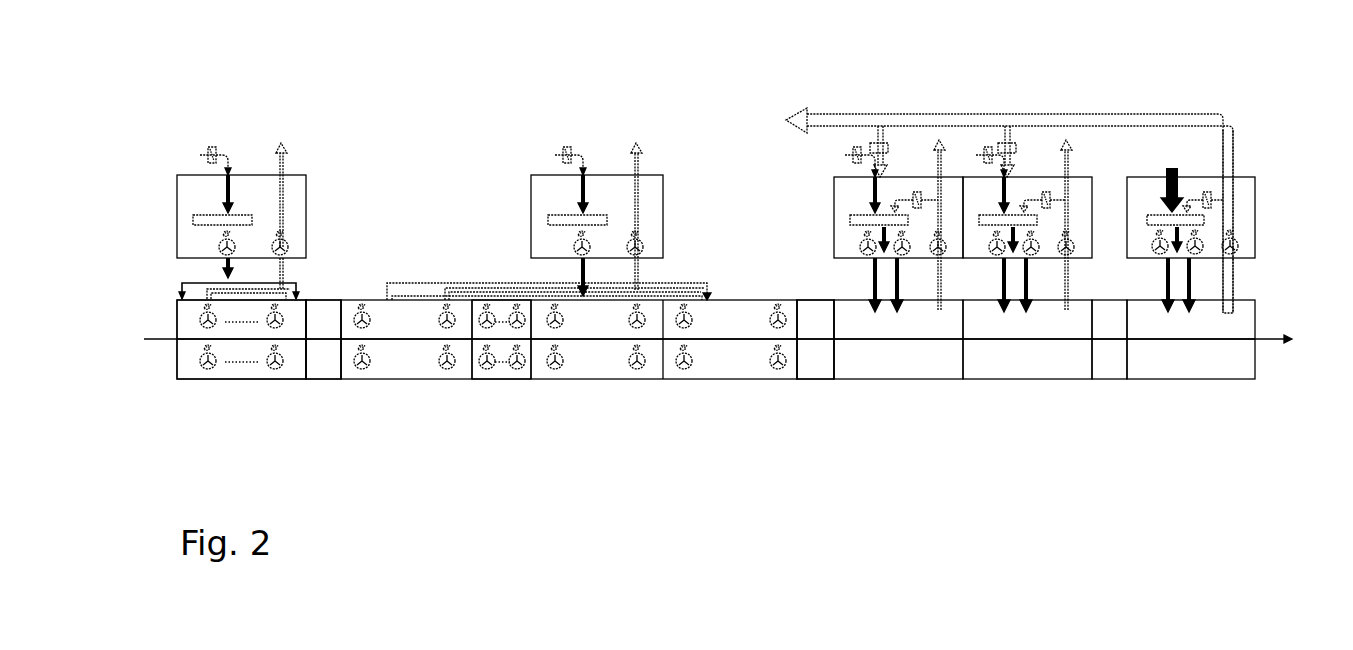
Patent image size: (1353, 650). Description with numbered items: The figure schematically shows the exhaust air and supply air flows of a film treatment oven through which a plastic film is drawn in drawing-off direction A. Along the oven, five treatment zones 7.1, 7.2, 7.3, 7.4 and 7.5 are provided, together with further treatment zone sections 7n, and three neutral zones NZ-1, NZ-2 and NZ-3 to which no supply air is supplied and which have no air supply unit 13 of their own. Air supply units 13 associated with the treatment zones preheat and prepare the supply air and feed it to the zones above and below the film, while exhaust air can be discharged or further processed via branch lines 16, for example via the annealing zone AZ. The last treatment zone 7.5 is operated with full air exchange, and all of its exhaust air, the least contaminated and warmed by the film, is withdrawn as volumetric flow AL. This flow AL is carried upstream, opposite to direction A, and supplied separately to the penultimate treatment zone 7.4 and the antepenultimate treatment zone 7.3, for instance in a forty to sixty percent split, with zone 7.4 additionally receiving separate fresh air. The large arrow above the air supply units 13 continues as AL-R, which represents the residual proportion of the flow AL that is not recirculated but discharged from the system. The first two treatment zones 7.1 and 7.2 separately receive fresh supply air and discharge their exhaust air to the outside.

The air supply unit 13 is at (293, 198).
The branch lines 16 is at (477, 290).
The first treatment zone 7.1 is at (197, 397).
The second treatment zone 7.2 is at (591, 402).
The antepenultimate treatment zone 7.3 is at (897, 370).
The penultimate treatment zone 7.4 is at (1035, 370).
The last treatment zone 7.5 is at (1180, 367).
The treatment zone 7n is at (323, 370).
The first neutral zone NZ-1 is at (327, 315).
The second neutral zone NZ-2 is at (813, 312).
The third neutral zone NZ-3 is at (1110, 320).
The annealing zone AZ is at (493, 402).
The exhaust air volumetric flow AL is at (1228, 147).
The residual exhaust air proportion AL-R is at (805, 112).
The drawing-off direction A is at (1265, 340).